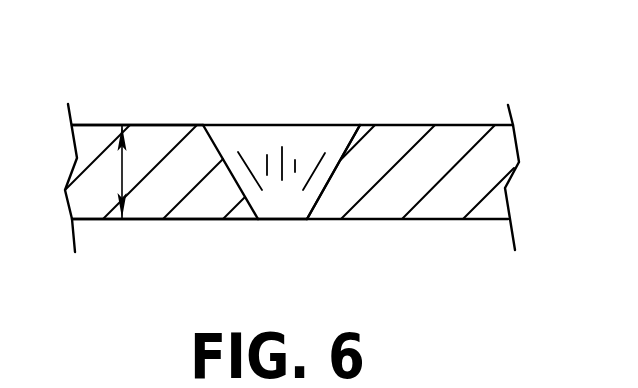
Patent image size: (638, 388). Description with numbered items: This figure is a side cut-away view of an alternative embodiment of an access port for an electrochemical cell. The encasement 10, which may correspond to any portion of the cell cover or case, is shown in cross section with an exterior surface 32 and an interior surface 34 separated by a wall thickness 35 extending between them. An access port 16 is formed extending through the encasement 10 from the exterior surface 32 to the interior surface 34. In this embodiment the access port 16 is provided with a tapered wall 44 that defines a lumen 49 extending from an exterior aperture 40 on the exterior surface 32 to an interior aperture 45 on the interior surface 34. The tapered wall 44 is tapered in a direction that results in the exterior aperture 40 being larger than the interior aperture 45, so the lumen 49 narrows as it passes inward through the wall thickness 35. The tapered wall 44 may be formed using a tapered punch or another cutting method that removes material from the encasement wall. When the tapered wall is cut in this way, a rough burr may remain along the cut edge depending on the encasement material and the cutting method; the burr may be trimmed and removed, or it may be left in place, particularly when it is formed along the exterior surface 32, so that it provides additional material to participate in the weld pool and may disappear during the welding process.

The encasement 10 is at (453, 148).
The access port 16 is at (271, 76).
The exterior surface 32 is at (147, 124).
The interior surface 34 is at (138, 220).
The wall thickness 35 is at (123, 175).
The exterior aperture 40 is at (323, 138).
The tapered wall 44 is at (333, 180).
The interior aperture 45 is at (279, 220).
The lumen 49 is at (268, 180).